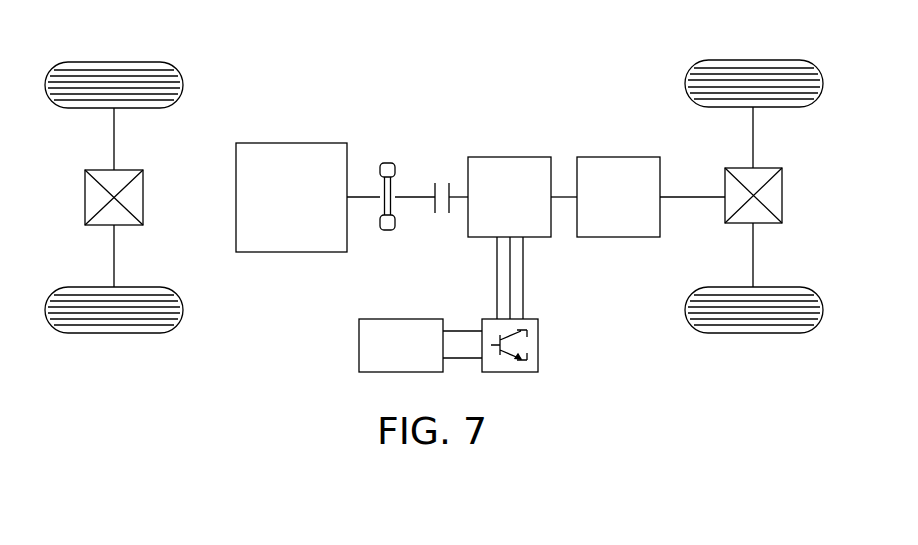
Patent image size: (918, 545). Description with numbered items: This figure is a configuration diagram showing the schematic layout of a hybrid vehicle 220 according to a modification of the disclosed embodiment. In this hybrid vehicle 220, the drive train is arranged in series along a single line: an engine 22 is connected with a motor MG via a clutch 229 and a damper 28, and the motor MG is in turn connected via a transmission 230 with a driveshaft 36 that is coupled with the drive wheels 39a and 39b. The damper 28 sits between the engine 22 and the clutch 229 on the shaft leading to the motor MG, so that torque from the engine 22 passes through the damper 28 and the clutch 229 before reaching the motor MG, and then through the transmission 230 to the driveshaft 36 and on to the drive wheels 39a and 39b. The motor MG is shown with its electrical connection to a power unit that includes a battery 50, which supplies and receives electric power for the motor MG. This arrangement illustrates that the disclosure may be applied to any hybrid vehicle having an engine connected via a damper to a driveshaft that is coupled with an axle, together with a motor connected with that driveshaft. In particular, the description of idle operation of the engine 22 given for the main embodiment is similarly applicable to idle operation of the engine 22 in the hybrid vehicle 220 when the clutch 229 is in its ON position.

The engine 22 is at (292, 142).
The damper 28 is at (387, 163).
The clutch 229 is at (441, 182).
The motor MG is at (510, 155).
The transmission 230 is at (617, 155).
The driveshaft 36 is at (687, 195).
The drive wheel 39a is at (752, 58).
The drive wheel 39b is at (753, 335).
The battery 50 is at (402, 316).
The hybrid vehicle 220 is at (547, 186).